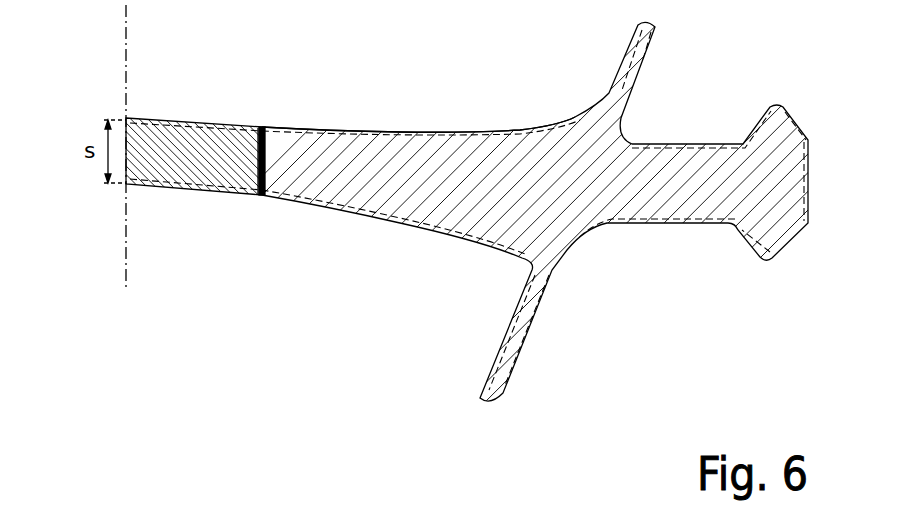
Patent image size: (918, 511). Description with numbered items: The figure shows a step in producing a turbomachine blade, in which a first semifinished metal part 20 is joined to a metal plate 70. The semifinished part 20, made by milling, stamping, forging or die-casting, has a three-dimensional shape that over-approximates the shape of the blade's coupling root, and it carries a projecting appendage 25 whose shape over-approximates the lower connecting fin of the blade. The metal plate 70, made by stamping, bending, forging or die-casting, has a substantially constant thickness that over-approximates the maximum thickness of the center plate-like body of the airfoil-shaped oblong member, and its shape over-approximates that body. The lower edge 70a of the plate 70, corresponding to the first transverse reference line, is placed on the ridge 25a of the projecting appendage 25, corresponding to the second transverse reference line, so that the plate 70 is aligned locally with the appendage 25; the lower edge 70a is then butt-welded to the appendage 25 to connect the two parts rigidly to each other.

The first semifinished metal part 20 is at (610, 225).
The projecting appendage 25 is at (403, 131).
The ridge 25a is at (259, 159).
The metal plate 70 is at (170, 168).
The lower edge 70a is at (266, 173).